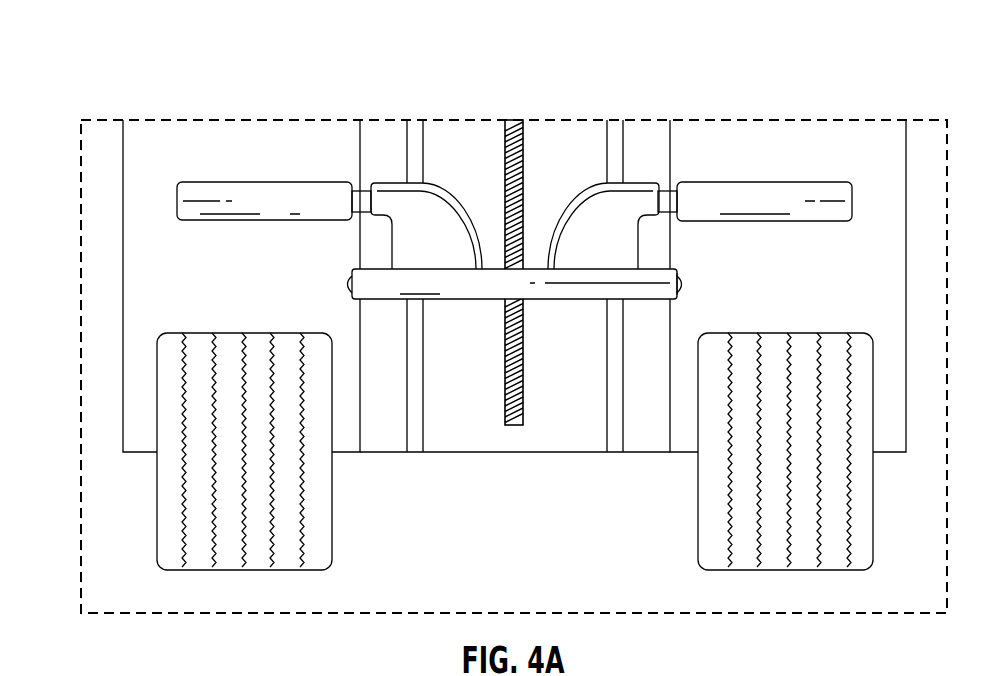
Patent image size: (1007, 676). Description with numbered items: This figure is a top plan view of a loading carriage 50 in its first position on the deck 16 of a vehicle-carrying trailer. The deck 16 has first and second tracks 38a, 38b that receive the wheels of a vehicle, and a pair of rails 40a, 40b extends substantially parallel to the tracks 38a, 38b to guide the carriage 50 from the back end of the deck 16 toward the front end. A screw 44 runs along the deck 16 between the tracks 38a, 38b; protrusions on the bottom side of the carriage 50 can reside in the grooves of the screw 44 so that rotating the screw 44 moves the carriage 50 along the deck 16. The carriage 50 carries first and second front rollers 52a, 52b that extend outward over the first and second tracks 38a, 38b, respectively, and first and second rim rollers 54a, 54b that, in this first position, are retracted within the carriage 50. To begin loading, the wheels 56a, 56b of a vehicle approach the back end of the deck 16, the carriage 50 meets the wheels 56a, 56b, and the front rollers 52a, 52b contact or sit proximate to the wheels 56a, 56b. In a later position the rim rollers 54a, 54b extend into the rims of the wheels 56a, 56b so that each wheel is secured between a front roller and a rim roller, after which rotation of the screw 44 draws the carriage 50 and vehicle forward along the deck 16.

The deck 16 is at (131, 43).
The first track 38a is at (242, 142).
The second track 38b is at (830, 132).
The first rail 40a is at (412, 127).
The second rail 40b is at (614, 127).
The screw 44 is at (511, 128).
The carriage 50 is at (435, 212).
The first front roller 52a is at (245, 205).
The second front roller 52b is at (797, 205).
The first rim roller 54a is at (343, 283).
The second rim roller 54b is at (688, 285).
The first wheel 56a is at (322, 525).
The second wheel 56b is at (708, 522).